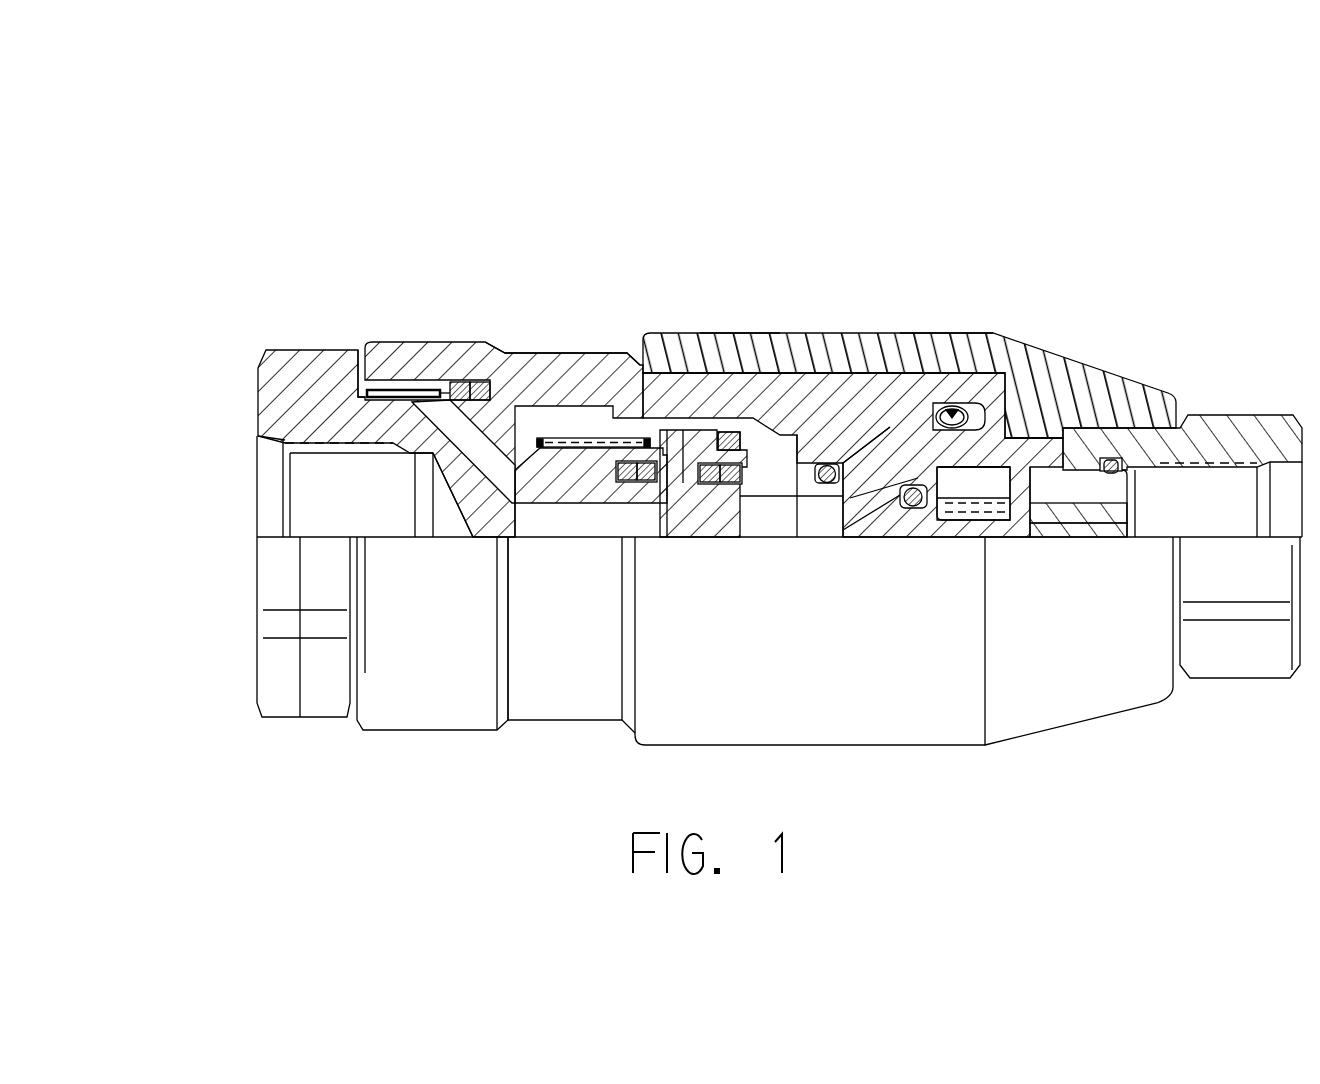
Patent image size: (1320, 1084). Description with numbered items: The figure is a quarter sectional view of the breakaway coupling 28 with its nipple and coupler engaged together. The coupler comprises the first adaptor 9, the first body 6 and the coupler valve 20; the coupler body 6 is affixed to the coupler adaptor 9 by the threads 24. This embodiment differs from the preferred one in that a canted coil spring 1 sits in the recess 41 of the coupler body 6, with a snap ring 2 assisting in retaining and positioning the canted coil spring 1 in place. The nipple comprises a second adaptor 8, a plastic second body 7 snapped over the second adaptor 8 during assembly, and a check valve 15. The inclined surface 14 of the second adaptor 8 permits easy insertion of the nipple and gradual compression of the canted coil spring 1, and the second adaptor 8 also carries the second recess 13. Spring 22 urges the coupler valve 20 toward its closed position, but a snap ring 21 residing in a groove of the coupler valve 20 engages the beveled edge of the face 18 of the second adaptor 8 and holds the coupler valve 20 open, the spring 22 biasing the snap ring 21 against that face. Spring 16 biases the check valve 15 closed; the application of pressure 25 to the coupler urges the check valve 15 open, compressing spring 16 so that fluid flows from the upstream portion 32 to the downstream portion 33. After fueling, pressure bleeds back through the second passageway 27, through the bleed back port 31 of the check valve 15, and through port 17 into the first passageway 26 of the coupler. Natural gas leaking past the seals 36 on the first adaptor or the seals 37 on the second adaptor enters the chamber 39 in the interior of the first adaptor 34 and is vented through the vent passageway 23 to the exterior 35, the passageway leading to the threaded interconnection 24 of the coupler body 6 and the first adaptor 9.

The canted coil spring 1 is at (974, 372).
The snap ring 2 is at (1013, 382).
The first body 6 is at (585, 380).
The second body 7 is at (905, 365).
The second adaptor 8 is at (1155, 440).
The first adaptor 9 is at (303, 405).
The second recess 13 is at (996, 466).
The inclined surface 14 is at (890, 425).
The check valve 15 is at (862, 522).
The spring 16 is at (985, 522).
The port 17 is at (768, 490).
The face 18 is at (668, 540).
The coupler valve 20 is at (663, 420).
The snap ring 21 is at (650, 490).
The spring 22 is at (535, 443).
The vent passageway 23 is at (413, 393).
The threads 24 is at (356, 350).
The application of pressure 25 is at (212, 499).
The first passageway 26 is at (565, 418).
The second passageway 27 is at (1215, 503).
The breakaway coupling 28 is at (738, 290).
The bleed back port 31 is at (948, 523).
The upstream portion 32 is at (834, 462).
The downstream portion 33 is at (928, 495).
The interior of the first adaptor 34 is at (500, 538).
The exterior 35 is at (292, 347).
The seals 36 is at (622, 482).
The seals 37 is at (722, 538).
The chamber 39 is at (572, 517).
The recess 41 is at (968, 404).